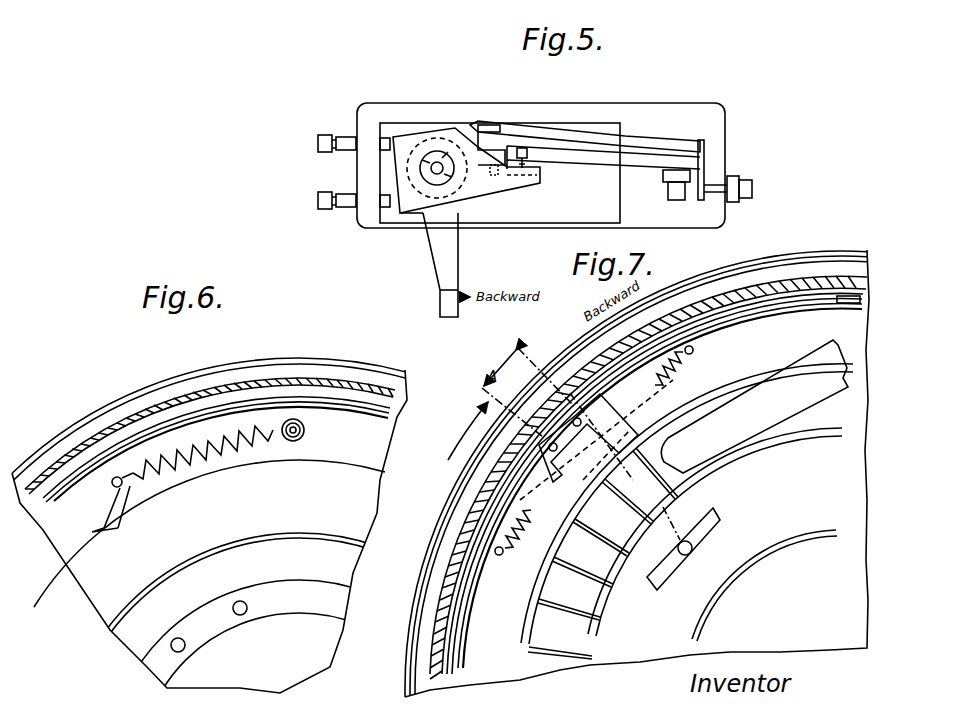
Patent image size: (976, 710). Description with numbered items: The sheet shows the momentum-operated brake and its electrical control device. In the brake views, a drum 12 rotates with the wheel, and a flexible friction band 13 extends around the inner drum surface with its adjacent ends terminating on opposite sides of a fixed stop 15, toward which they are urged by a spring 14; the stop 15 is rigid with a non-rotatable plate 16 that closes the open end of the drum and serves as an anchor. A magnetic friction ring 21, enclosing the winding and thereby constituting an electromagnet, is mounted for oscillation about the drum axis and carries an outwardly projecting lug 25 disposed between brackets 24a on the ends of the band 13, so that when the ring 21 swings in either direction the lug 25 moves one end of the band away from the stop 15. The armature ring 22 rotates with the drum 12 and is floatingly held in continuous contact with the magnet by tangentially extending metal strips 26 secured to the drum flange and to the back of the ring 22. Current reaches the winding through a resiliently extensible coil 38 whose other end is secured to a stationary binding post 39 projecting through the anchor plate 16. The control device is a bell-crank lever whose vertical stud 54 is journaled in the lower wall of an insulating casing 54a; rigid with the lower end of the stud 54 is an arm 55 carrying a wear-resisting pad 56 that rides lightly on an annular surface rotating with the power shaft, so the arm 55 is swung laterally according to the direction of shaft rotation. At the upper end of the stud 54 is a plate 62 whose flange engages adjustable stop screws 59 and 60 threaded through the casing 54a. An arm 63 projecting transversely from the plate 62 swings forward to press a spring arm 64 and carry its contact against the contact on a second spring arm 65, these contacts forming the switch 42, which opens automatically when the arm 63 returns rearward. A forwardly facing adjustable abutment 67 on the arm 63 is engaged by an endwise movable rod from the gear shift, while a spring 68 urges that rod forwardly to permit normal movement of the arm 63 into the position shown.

In FIG. 6, the drum 12 is at (290, 382).
In FIG. 7, the drum 12 is at (467, 531).
In FIG. 6, the flexible friction band 13 is at (372, 436).
In FIG. 7, the flexible friction band 13 is at (490, 552).
In FIG. 7, the spring 14 is at (470, 472).
In FIG. 7, the fixed stop 15 is at (562, 433).
In FIG. 6, the non-rotatable plate 16 is at (375, 462).
In FIG. 7, the ring 21 is at (608, 578).
In FIG. 7, the ring 22 is at (760, 448).
In FIG. 7, the brackets 24a is at (478, 615).
In FIG. 7, the lug 25 is at (614, 439).
In FIG. 7, the metal strips 26 is at (770, 410).
In FIG. 6, the coil 38 is at (200, 470).
In FIG. 6, the binding post 39 is at (305, 432).
In FIG. 5, the switch 42 is at (545, 152).
In FIG. 5, the vertical stud 54 is at (441, 165).
In FIG. 5, the casing 54a is at (652, 118).
In FIG. 5, the arm 55 is at (448, 258).
In FIG. 5, the pad 56 is at (440, 299).
In FIG. 5, the screw 59 is at (340, 148).
In FIG. 5, the screw 60 is at (340, 205).
In FIG. 5, the plate 62 is at (405, 137).
In FIG. 5, the arm 63 is at (515, 184).
In FIG. 5, the spring arm 64 is at (622, 182).
In FIG. 5, the spring arm 65 is at (578, 150).
In FIG. 5, the adjustable abutment 67 is at (485, 125).
In FIG. 5, the spring 68 is at (612, 138).